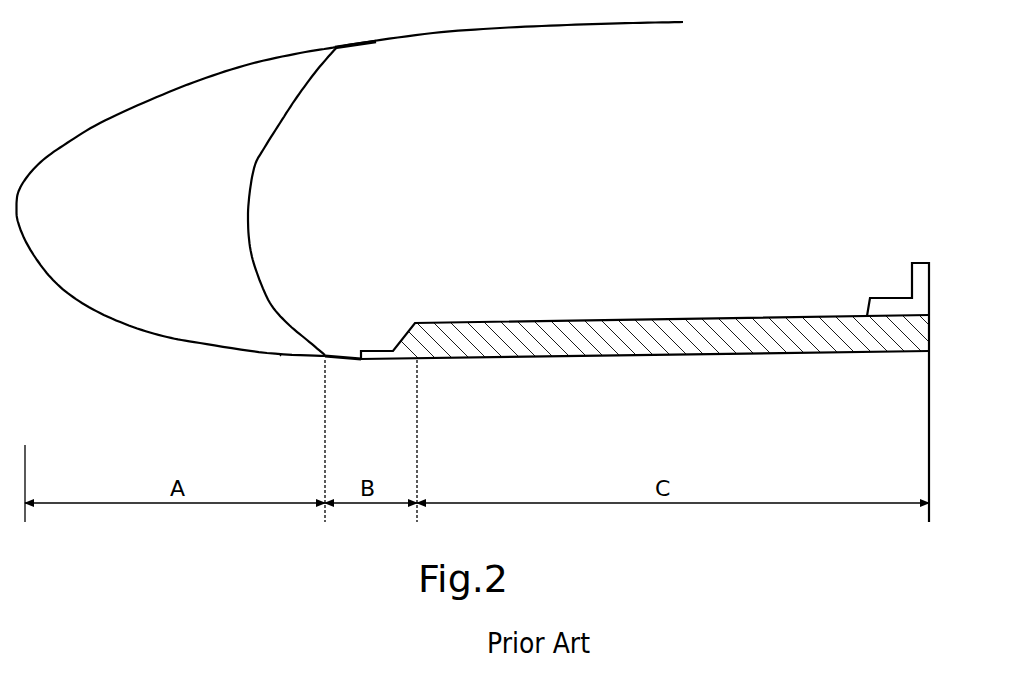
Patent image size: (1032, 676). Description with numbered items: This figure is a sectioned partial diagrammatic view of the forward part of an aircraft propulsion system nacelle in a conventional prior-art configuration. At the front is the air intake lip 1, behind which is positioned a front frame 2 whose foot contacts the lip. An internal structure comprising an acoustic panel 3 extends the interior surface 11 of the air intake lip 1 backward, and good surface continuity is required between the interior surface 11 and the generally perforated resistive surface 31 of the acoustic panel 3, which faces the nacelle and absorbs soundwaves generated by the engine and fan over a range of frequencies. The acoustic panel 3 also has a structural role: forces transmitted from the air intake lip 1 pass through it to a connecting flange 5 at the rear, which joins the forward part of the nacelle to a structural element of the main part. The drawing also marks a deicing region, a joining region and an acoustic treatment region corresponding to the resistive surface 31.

The air intake lip 1 is at (73, 297).
The front frame 2 is at (256, 164).
The interior surface 11 is at (280, 356).
The acoustic panel 3 is at (543, 334).
The resistive surface 31 is at (677, 358).
The connecting flange 5 is at (923, 263).